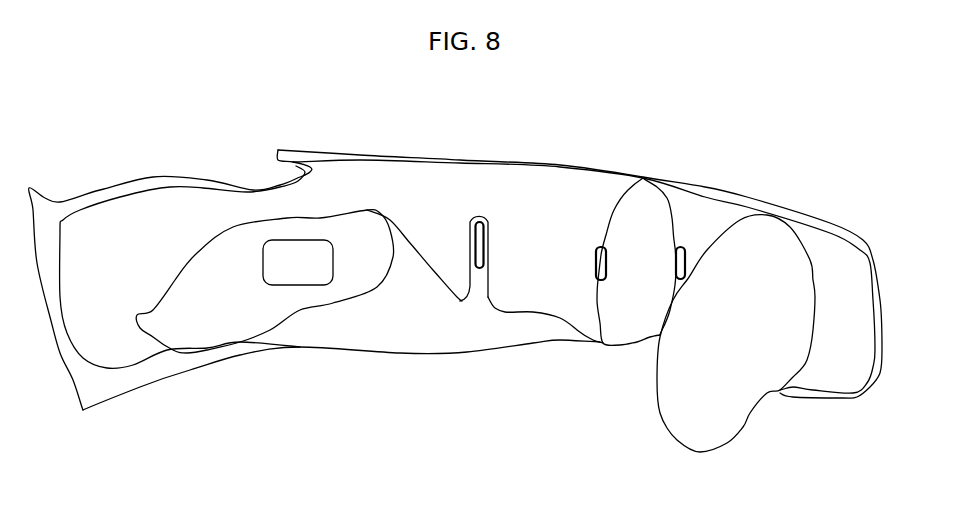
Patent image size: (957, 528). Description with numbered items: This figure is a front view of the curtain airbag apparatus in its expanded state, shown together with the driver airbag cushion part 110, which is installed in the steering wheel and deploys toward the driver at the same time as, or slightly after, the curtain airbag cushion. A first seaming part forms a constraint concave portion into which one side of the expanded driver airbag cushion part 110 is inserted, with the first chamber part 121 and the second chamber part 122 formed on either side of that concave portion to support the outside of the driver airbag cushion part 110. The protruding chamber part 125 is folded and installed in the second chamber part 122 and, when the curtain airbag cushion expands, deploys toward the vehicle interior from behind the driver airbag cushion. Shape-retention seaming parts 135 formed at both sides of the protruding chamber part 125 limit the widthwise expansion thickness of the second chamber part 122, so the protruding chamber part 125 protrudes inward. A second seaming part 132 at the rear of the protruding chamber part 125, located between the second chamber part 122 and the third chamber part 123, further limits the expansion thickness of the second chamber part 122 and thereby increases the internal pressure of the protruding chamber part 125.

The driver airbag cushion part 110 is at (715, 413).
The first chamber part 121 is at (850, 363).
The second chamber part 122 is at (528, 292).
The third chamber part 123 is at (440, 252).
The protruding chamber part 125 is at (628, 318).
The second seaming part 132 is at (477, 273).
The shape-retention seaming part 135 is at (677, 252).